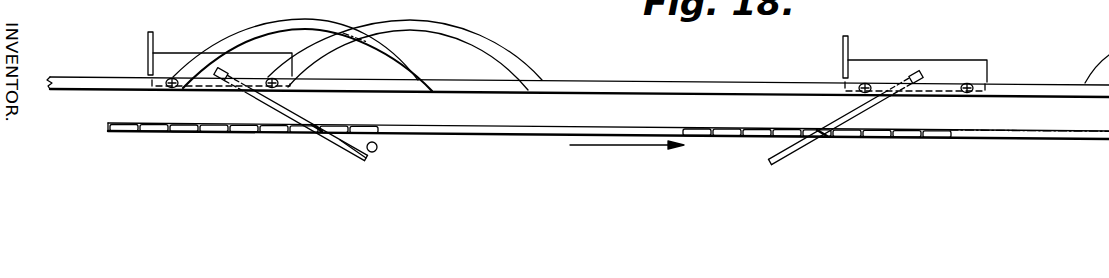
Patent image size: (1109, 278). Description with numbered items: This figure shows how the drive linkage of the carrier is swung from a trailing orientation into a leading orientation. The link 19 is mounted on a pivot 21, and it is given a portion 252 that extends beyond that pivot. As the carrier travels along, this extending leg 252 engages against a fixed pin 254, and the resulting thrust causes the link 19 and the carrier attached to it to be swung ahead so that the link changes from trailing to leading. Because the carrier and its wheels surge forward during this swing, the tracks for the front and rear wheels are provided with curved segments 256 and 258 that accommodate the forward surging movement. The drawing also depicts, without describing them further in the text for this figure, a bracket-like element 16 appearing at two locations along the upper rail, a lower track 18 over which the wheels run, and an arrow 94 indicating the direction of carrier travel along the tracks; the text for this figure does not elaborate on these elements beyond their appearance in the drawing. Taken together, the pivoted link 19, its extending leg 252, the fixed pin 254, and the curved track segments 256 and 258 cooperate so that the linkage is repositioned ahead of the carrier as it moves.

The bracket 16 is at (172, 52).
The track 18 is at (1028, 135).
The link 19 is at (268, 104).
The pivot 21 is at (315, 130).
The direction arrow 94 is at (610, 146).
The extending leg 252 is at (350, 145).
The fixed pin 254 is at (380, 150).
The curved segment 256 is at (475, 33).
The curved segment 258 is at (275, 22).